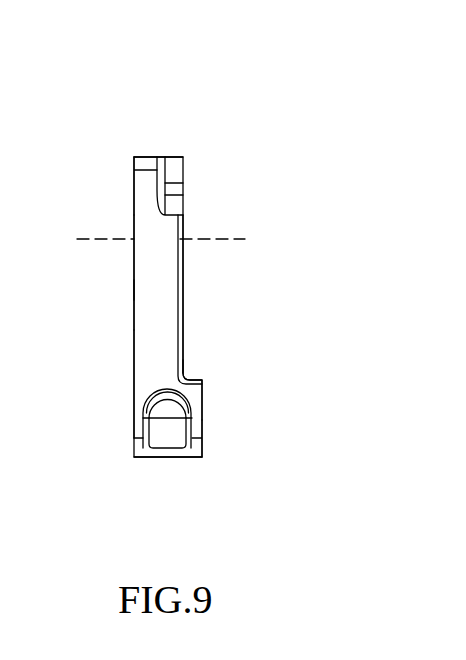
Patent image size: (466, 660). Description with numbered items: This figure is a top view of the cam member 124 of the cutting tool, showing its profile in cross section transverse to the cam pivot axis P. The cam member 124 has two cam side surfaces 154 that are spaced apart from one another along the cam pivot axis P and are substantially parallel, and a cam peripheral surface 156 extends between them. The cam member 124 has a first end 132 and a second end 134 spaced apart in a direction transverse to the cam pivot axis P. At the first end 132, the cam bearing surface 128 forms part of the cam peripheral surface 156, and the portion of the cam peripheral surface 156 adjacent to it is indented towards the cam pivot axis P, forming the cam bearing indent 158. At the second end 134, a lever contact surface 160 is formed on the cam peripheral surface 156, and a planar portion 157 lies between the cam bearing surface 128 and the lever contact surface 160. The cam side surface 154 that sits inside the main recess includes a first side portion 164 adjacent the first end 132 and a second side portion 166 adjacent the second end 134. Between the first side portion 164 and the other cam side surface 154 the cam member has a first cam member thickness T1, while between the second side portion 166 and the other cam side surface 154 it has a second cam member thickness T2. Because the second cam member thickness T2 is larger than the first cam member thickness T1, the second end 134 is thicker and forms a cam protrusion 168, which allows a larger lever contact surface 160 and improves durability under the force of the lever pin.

The cam member 124 is at (182, 108).
The first end 132 is at (143, 130).
The second end 134 is at (173, 465).
The cam bearing surface 128 is at (142, 182).
The cam bearing indent 158 is at (172, 170).
The first cam member thickness T1 is at (75, 195).
The cam pivot axis P is at (171, 239).
The planar portion 157 is at (158, 268).
The first side portion 164 is at (183, 252).
The cam side surfaces 154 is at (183, 280).
The cam peripheral surface 156 is at (155, 361).
The second side portion 166 is at (203, 400).
The second cam member thickness T2 is at (73, 420).
The lever contact surface 160 is at (167, 440).
The cam protrusion 168 is at (202, 445).